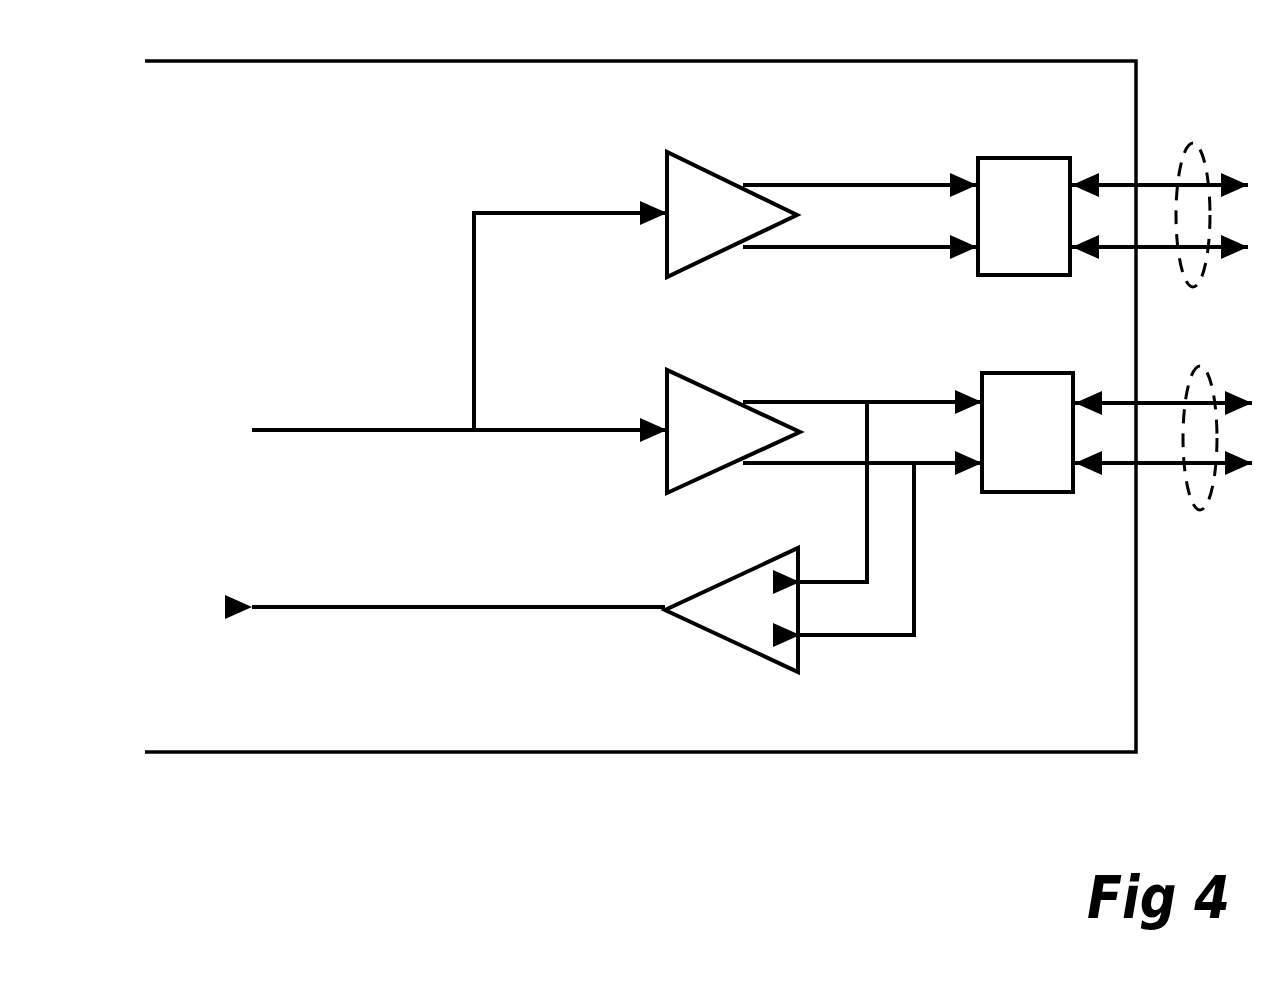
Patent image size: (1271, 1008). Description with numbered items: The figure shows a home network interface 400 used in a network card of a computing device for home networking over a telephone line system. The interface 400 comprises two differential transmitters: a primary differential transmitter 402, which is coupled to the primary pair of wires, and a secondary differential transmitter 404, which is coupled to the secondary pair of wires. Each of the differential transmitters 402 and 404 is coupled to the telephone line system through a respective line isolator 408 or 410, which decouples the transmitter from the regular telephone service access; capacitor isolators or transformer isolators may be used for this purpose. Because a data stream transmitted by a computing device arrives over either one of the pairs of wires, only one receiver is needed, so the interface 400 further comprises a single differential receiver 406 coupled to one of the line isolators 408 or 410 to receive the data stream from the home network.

The home network interface 400 is at (640, 406).
The primary differential transmitter 402 is at (703, 185).
The secondary differential transmitter 404 is at (698, 410).
The differential receiver 406 is at (715, 595).
The line isolator 408 is at (1020, 167).
The line isolator 410 is at (1032, 383).